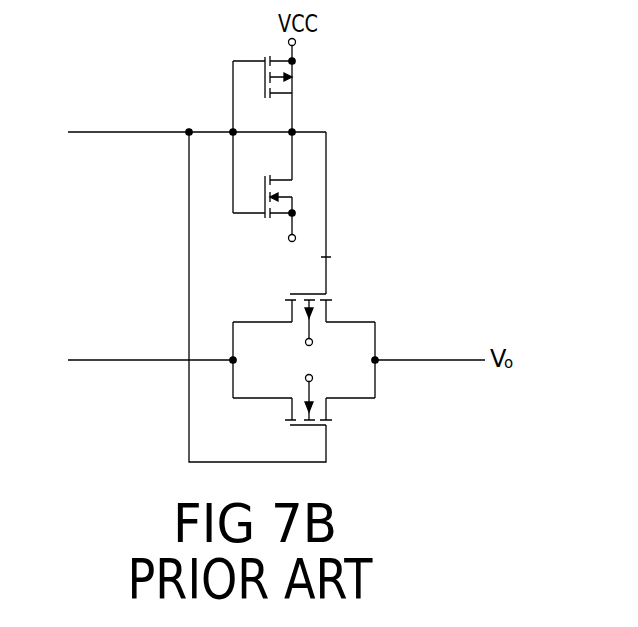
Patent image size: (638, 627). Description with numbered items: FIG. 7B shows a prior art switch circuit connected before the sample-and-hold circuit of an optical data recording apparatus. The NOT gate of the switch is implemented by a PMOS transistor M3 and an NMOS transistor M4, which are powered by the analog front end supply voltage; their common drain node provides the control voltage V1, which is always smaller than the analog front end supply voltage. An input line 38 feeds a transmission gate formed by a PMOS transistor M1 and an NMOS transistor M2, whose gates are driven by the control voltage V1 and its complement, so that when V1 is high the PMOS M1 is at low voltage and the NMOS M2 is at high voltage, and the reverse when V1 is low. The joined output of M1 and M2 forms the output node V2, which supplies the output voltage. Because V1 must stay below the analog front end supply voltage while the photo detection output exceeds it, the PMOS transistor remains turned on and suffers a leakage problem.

The input signal line 38 is at (143, 362).
The PMOS transistor M1 is at (294, 316).
The NMOS transistor M2 is at (294, 411).
The PMOS transistor M3 is at (281, 87).
The NMOS transistor M4 is at (264, 187).
The control voltage V1 is at (327, 257).
The output voltage node V2 is at (377, 358).